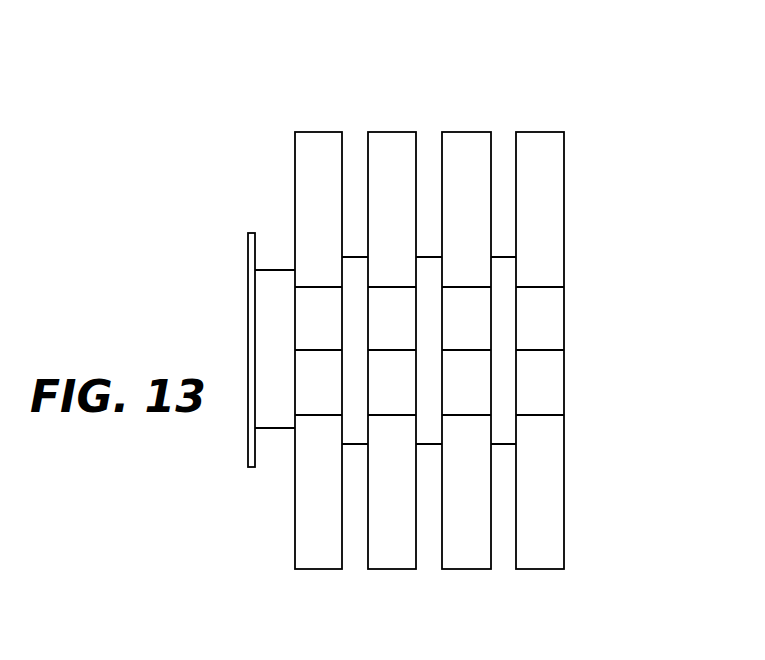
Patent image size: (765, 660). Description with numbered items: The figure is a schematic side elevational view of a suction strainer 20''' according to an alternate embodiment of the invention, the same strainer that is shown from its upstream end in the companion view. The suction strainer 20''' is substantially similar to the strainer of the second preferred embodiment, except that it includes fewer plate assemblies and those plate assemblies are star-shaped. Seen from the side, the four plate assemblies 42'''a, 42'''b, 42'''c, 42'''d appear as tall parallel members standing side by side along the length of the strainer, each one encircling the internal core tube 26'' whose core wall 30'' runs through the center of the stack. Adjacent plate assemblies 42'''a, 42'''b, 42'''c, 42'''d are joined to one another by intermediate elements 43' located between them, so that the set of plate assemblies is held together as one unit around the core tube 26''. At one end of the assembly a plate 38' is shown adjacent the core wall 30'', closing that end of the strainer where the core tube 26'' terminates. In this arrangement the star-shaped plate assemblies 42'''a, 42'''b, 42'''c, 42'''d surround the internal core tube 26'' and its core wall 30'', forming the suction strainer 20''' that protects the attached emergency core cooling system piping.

The suction strainer 20''' is at (484, 163).
The internal core tube 26'' is at (239, 475).
The core wall 30'' is at (251, 304).
The mounting plate 38' is at (215, 350).
The plate assembly 42'''a is at (320, 314).
The plate assembly 42'''b is at (390, 302).
The plate assembly 42'''c is at (466, 314).
The plate assembly 42'''d is at (537, 302).
The fin connecting web 43' is at (433, 442).